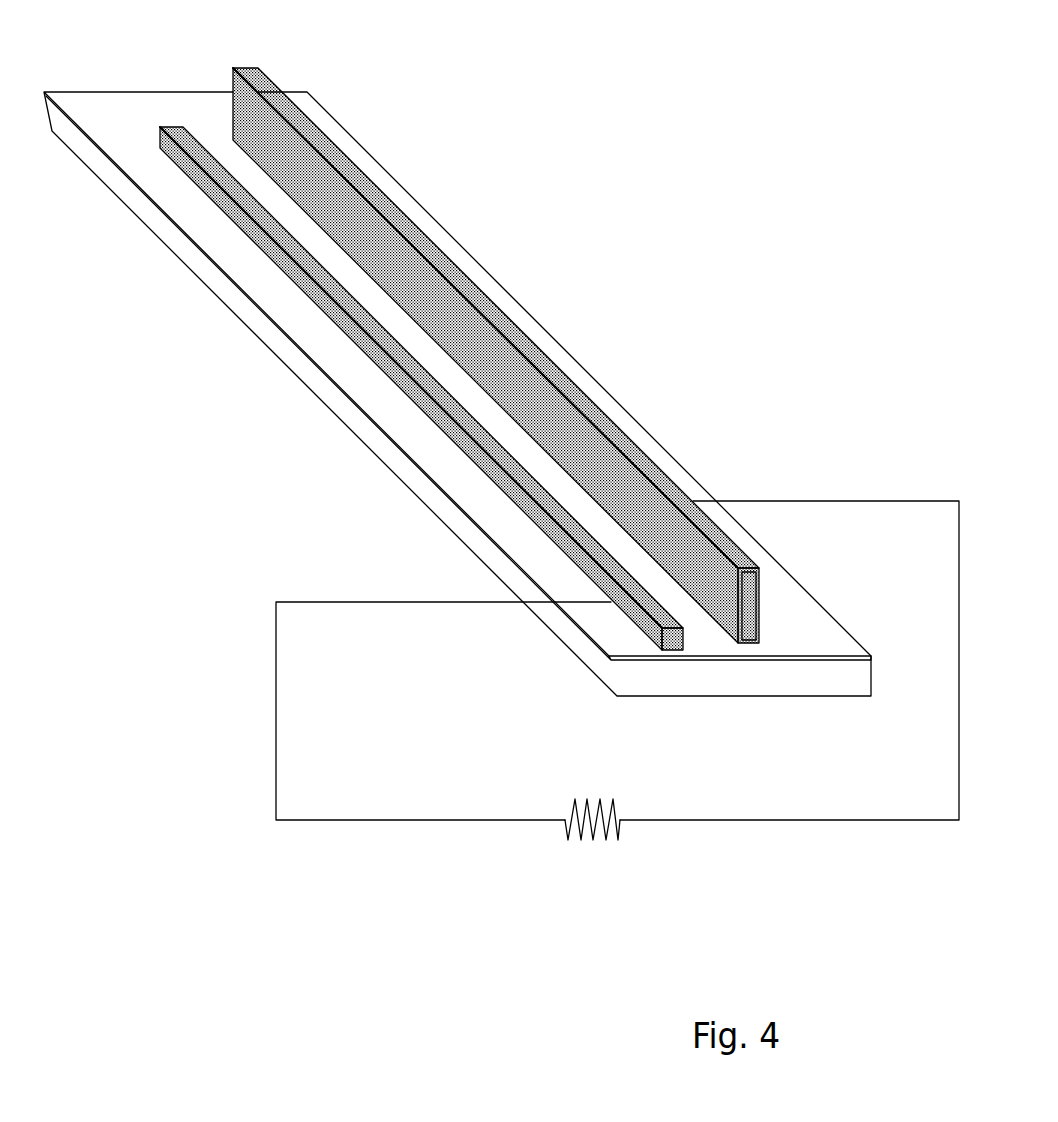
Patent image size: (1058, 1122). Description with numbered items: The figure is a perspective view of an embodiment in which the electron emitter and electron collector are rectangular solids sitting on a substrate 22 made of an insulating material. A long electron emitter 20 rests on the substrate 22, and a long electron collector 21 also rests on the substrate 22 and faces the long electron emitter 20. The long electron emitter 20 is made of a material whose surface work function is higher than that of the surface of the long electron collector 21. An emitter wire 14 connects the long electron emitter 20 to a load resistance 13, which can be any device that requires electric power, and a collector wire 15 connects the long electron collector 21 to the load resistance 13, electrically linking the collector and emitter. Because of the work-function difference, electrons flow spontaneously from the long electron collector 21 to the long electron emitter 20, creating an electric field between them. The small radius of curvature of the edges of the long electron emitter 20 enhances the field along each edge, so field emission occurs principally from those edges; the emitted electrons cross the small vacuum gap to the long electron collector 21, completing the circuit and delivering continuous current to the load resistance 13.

The load resistance 13 is at (607, 848).
The emitter wire 14 is at (350, 834).
The collector wire 15 is at (872, 843).
The long electron emitter 20 is at (300, 290).
The long electron collector 21 is at (275, 68).
The substrate 22 is at (373, 440).